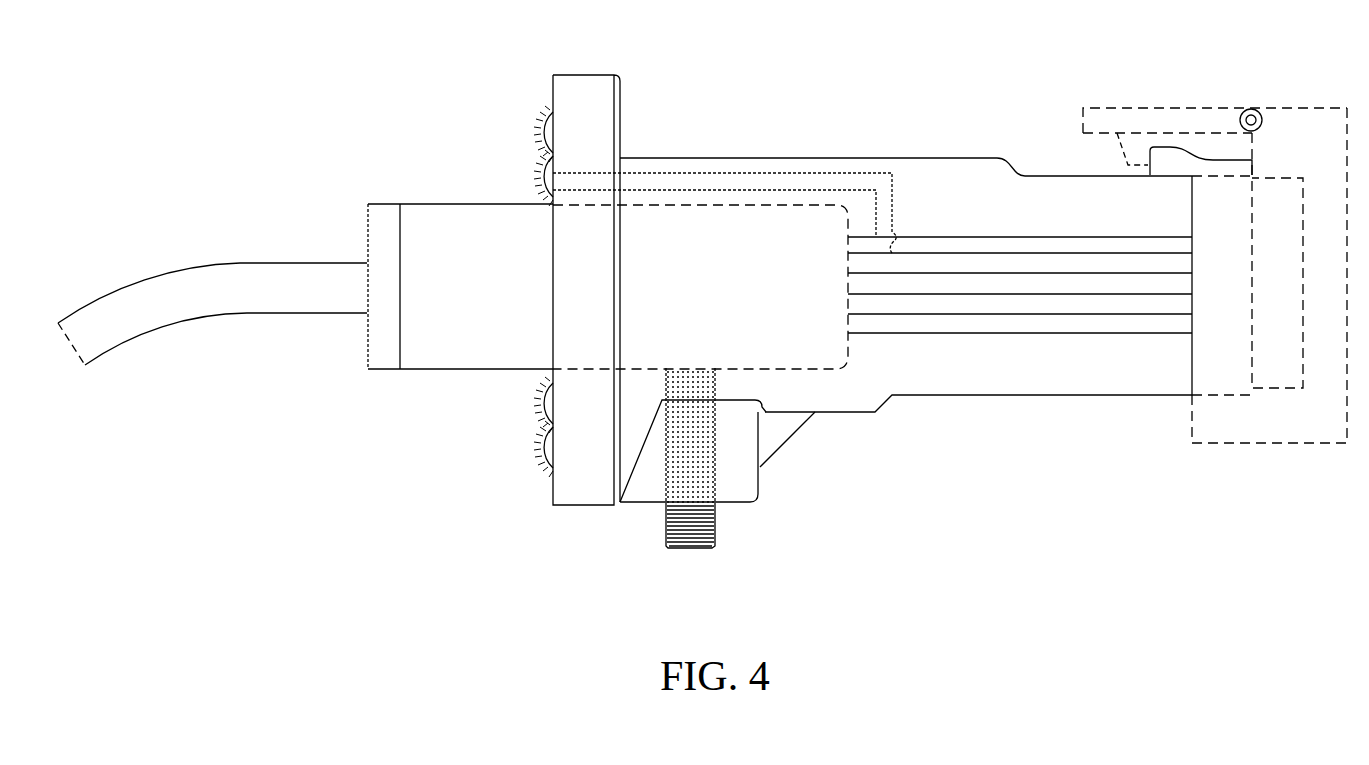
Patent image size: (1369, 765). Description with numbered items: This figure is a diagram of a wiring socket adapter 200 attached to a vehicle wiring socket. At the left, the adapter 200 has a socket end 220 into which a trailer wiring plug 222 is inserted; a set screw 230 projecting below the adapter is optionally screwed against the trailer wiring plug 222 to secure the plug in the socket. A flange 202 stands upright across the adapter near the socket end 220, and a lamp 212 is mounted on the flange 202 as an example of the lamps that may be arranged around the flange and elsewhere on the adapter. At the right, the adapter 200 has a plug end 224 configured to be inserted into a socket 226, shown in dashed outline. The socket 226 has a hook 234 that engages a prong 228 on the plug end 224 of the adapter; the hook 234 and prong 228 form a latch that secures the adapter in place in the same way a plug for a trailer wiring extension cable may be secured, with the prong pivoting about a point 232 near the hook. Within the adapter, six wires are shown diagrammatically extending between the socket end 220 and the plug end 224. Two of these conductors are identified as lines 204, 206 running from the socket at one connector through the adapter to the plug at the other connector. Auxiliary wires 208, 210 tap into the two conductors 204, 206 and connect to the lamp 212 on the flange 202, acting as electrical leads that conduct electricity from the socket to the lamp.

The wiring socket adapter 200 is at (1131, 482).
The flange 202 is at (552, 485).
The conductor 204 is at (995, 237).
The conductor 206 is at (927, 253).
The auxiliary wire 208 is at (735, 189).
The auxiliary wire 210 is at (822, 173).
The lamp 212 is at (542, 176).
The socket end 220 is at (662, 158).
The trailer wiring plug 222 is at (460, 370).
The plug end 224 is at (1143, 396).
The socket 226 is at (1270, 444).
The prong 228 is at (1213, 160).
The set screw 230 is at (1113, 108).
The pivot 232 is at (1251, 108).
The hook 234 is at (1120, 148).